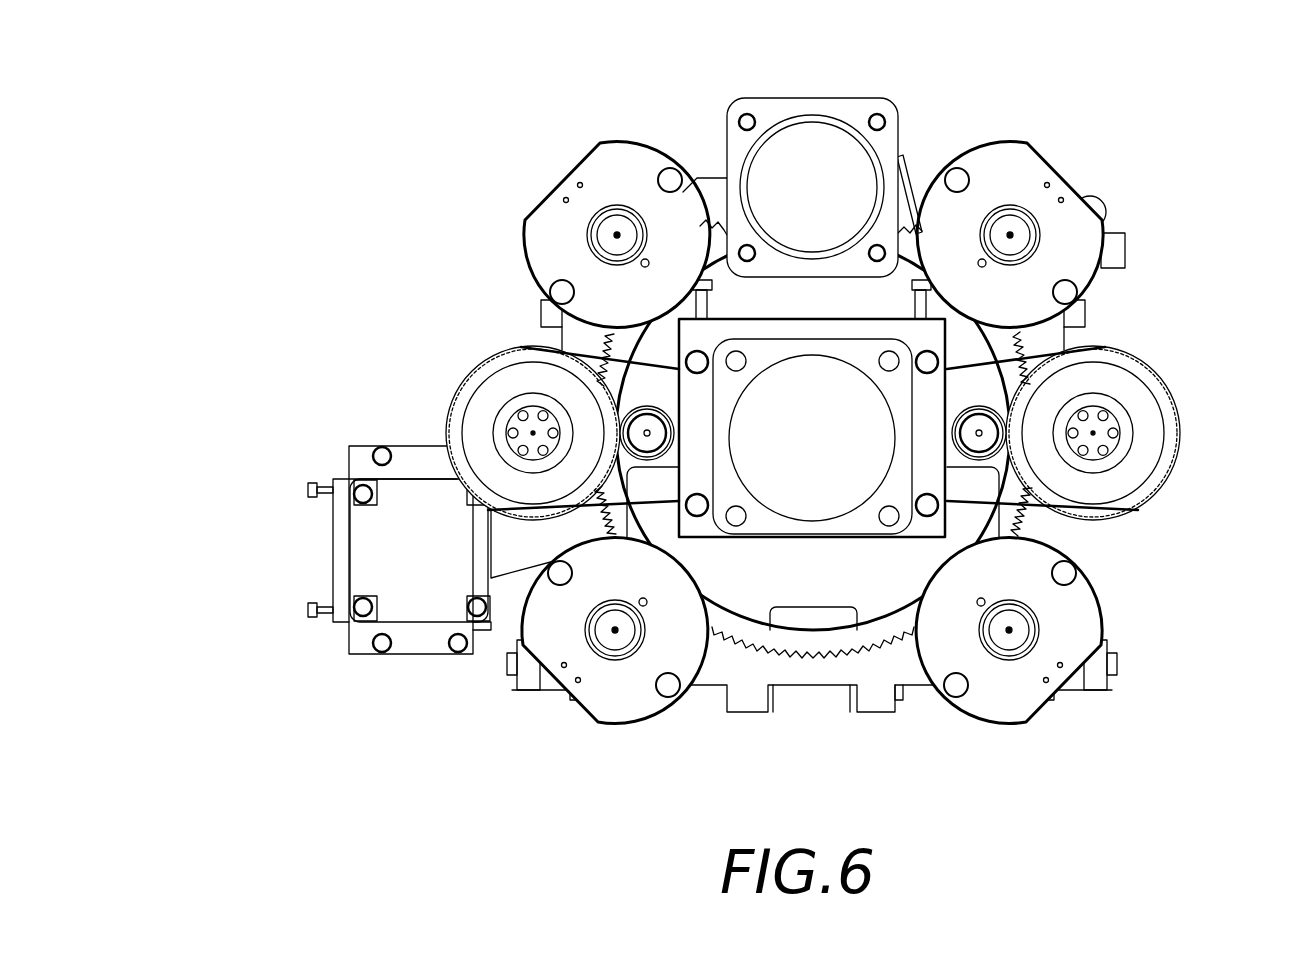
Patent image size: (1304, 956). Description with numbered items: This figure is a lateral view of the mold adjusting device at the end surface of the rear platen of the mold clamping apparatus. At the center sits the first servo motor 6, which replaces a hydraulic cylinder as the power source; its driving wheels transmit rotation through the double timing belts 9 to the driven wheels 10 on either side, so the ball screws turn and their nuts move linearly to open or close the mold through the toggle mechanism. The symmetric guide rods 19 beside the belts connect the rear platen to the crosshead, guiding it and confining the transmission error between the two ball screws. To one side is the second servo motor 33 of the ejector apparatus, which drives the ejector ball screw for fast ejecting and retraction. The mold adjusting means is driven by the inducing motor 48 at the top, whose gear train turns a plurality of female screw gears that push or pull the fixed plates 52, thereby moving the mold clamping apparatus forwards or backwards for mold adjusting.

The first servo motor 6 is at (808, 463).
The timing belt 9 is at (617, 493).
The driven wheel 10 is at (488, 397).
The guide rod 19 is at (645, 420).
The second servo motor 33 is at (387, 558).
The inducing motor 48 is at (803, 160).
The fixed plate 52 is at (617, 180).